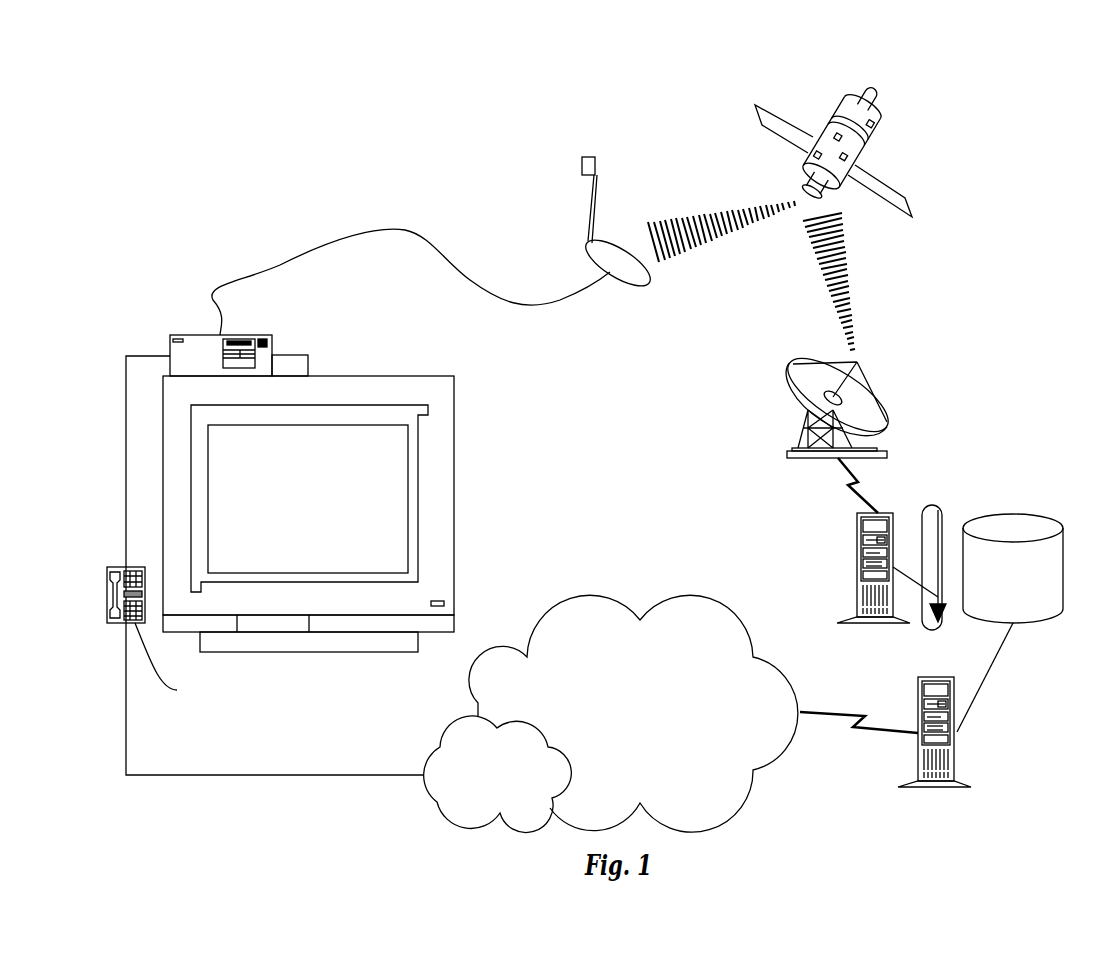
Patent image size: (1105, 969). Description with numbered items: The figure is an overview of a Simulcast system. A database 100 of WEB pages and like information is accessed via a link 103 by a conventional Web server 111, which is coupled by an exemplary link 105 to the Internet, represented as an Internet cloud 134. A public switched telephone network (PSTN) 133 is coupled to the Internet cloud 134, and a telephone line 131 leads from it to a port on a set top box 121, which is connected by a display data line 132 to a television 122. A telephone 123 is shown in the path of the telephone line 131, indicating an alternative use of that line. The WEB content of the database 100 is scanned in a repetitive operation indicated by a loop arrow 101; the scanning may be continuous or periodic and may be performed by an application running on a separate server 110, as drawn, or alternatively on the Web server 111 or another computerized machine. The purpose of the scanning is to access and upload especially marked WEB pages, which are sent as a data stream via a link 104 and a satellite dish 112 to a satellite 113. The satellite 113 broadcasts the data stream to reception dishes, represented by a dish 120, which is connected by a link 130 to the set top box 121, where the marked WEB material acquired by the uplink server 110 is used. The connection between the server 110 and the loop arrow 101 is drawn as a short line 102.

The database 100 is at (1013, 512).
The loop arrow 101 is at (940, 513).
The link from receiving computer to data flow 102 is at (920, 590).
The link 103 is at (973, 700).
The link 104 is at (862, 487).
The link 105 is at (862, 737).
The server 110 is at (857, 568).
The Web server 111 is at (937, 790).
The satellite dish 112 is at (888, 415).
The satellite 113 is at (885, 135).
The dish 120 is at (652, 278).
The set top box 121 is at (272, 338).
The television 122 is at (455, 513).
The telephone 123 is at (120, 567).
The link 130 is at (423, 233).
The telephone line 131 is at (158, 355).
The display data line 132 is at (310, 360).
The public switched telephone network (PSTN) 133 is at (437, 797).
The Internet cloud 134 is at (747, 788).